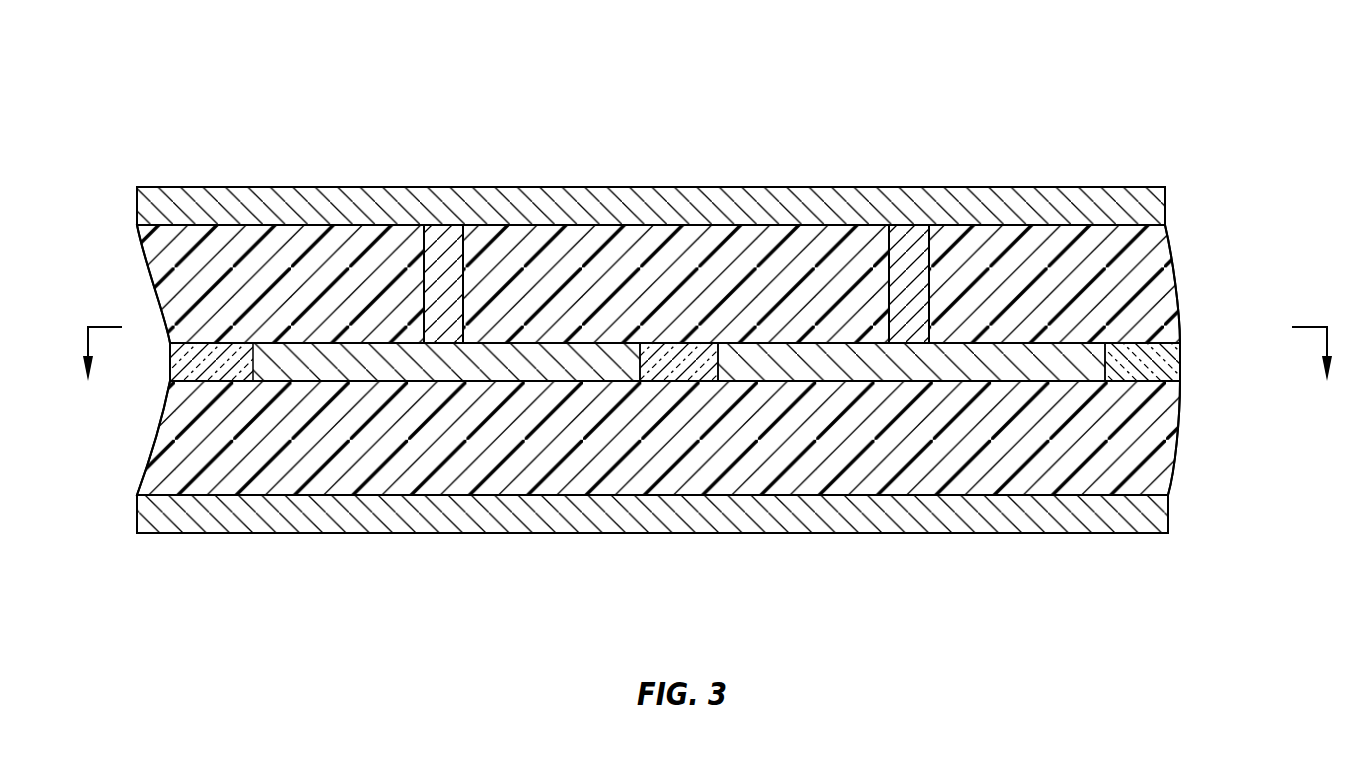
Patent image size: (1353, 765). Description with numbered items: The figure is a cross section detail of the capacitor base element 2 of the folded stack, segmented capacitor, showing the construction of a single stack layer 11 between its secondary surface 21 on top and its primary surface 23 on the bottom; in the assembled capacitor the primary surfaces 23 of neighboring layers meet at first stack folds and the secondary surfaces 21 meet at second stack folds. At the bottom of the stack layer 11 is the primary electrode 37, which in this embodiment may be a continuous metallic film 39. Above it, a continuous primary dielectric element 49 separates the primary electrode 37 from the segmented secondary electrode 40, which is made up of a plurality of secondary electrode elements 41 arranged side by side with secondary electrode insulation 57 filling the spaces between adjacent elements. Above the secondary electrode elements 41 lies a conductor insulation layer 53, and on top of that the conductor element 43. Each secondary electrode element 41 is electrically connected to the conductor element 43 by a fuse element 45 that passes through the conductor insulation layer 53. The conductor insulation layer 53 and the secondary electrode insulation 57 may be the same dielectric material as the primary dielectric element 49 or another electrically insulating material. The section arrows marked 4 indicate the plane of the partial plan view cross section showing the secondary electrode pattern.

The capacitor base element 2 is at (507, 188).
The section line 4- 4 is at (707, 366).
The stack layer 11 is at (750, 192).
The secondary surface 21 is at (915, 192).
The primary surface 23 is at (812, 535).
The primary electrode 37 is at (413, 522).
The continuous metallic film 39 is at (548, 523).
The segmented secondary electrode 40 is at (365, 353).
The secondary electrode elements 41 is at (298, 355).
The conductor element 43 is at (427, 202).
The fuse element 45 is at (455, 287).
The primary dielectric element 49 is at (1150, 438).
The conductor insulation layer 53 is at (272, 242).
The secondary electrode insulation 57 is at (1157, 363).